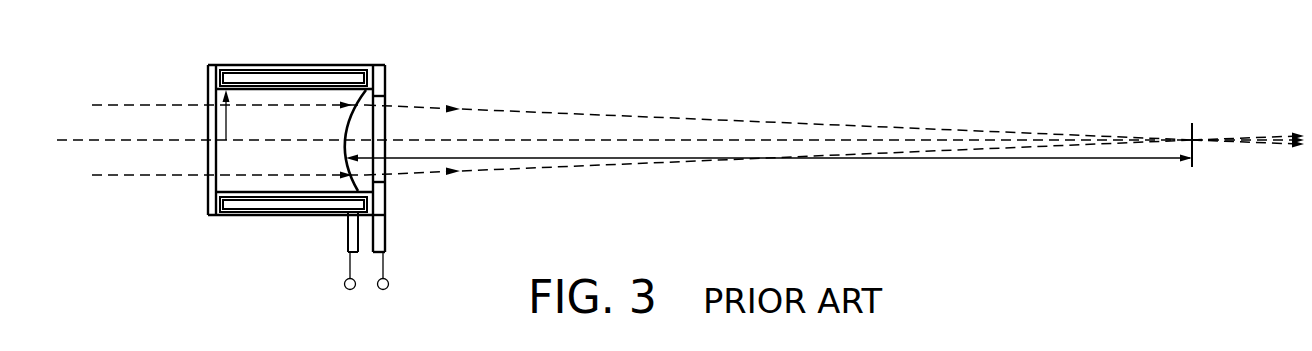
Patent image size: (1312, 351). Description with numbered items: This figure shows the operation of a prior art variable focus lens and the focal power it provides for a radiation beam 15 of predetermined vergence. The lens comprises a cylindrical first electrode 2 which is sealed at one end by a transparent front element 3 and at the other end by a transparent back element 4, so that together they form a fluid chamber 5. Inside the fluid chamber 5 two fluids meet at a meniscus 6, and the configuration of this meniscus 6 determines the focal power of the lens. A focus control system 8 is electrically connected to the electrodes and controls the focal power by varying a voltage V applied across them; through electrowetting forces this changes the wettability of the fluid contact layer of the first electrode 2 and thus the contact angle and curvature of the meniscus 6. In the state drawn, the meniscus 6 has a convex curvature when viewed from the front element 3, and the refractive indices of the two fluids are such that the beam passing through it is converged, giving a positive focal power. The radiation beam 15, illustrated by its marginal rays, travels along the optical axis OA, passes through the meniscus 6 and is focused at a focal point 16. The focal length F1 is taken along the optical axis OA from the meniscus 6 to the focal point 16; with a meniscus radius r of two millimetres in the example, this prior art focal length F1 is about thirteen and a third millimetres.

The first electrode 2 is at (263, 82).
The front element 3 is at (209, 213).
The back element 4 is at (385, 75).
The fluid chamber 5 is at (247, 183).
The meniscus 6 is at (358, 187).
The focus control system 8 is at (379, 233).
The radiation beam 15 is at (113, 103).
The focal point 16 is at (1194, 126).
The optical axis OA is at (82, 143).
The radius of the meniscus r is at (232, 122).
The focal length F1 is at (1040, 159).
The voltage V is at (364, 309).